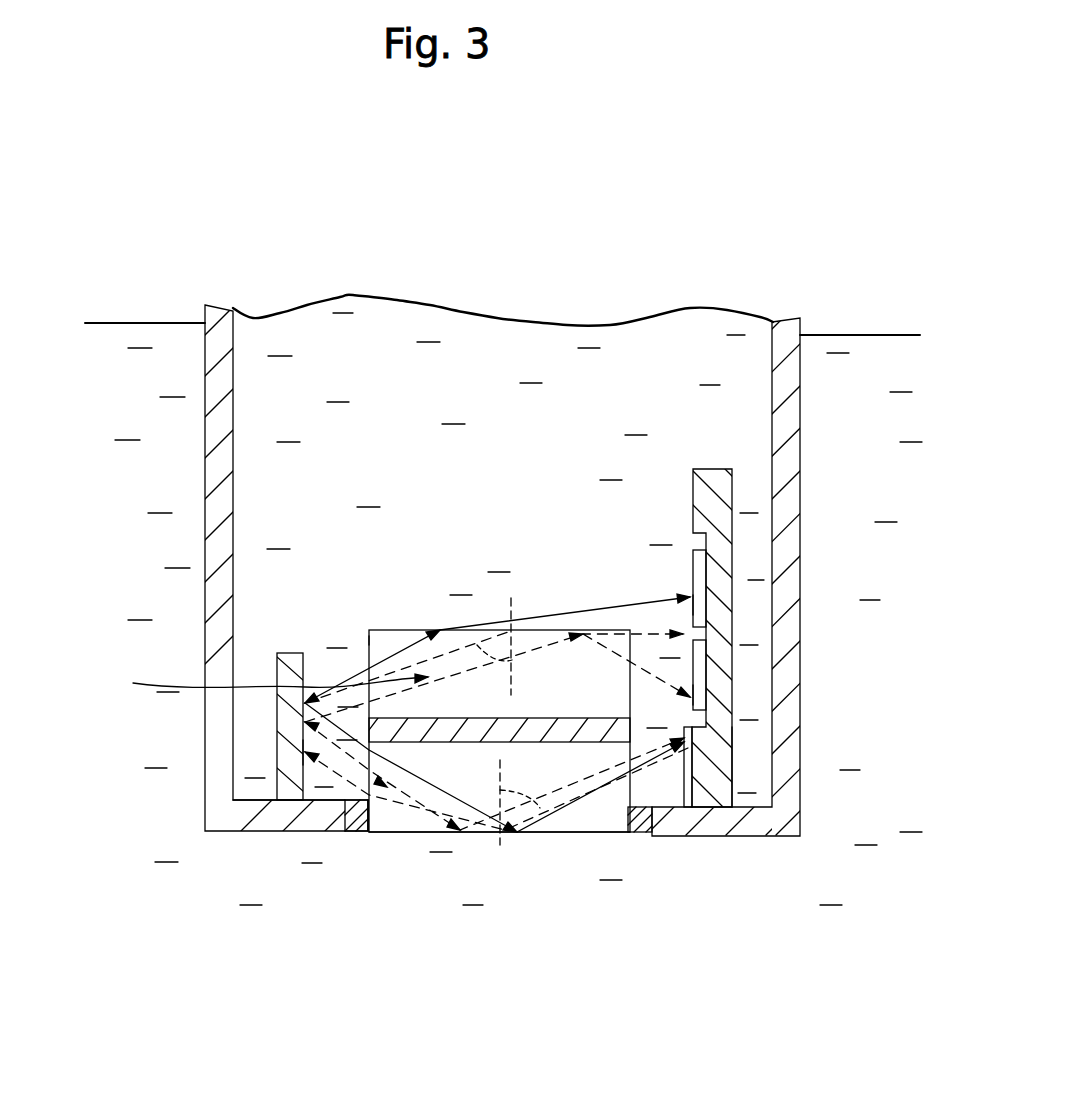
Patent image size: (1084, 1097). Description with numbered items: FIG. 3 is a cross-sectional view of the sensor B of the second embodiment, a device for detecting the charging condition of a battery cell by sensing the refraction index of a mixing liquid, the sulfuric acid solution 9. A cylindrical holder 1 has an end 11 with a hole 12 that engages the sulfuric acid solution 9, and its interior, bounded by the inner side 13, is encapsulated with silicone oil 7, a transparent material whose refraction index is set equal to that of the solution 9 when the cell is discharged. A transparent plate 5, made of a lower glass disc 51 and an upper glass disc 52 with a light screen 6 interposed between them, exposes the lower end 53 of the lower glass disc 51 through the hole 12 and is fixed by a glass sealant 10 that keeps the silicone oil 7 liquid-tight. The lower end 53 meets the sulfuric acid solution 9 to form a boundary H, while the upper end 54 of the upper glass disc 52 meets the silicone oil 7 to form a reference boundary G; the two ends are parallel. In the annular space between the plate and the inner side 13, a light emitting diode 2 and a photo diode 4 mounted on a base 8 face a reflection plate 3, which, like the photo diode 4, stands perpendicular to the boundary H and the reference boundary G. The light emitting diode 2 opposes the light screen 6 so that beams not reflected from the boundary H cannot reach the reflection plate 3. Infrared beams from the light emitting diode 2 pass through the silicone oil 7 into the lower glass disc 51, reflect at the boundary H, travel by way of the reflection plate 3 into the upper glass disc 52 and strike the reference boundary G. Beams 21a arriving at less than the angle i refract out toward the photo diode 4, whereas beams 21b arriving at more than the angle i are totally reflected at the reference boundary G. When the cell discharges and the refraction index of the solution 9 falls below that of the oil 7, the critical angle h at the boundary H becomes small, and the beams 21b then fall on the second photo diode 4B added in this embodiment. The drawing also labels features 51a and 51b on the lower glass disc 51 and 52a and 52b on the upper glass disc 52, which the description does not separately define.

The holder 1 is at (205, 487).
The light emitting element 2 is at (735, 770).
The reflection plate 3 is at (232, 790).
The light receiving element 4 is at (707, 566).
The second photo diode 4B is at (700, 730).
The transparent plate 5 is at (88, 672).
The light screen 6 is at (305, 722).
The silicone oil 7 is at (313, 402).
The base 8 is at (735, 485).
The sulfuric acid solution 9 is at (874, 917).
The glass sealant 10 is at (356, 831).
The end 11 is at (216, 832).
The hole 12 is at (370, 811).
The inner side 13 is at (765, 400).
The light beams 21a is at (700, 612).
The light beams 21b is at (700, 702).
The lower glass disc 51 is at (300, 753).
The light receiving block 51a is at (660, 832).
The light receiving surface 51b is at (305, 752).
The upper glass disc 52 is at (390, 658).
The light emitting portion 52a is at (700, 680).
The light emitting surface 52b is at (370, 637).
The lower end 53 is at (528, 835).
The upper end 54 is at (386, 630).
The sensor B is at (200, 316).
The reference boundary G is at (546, 630).
The boundary H is at (482, 835).
The critical angle h is at (554, 772).
The angle i is at (486, 707).